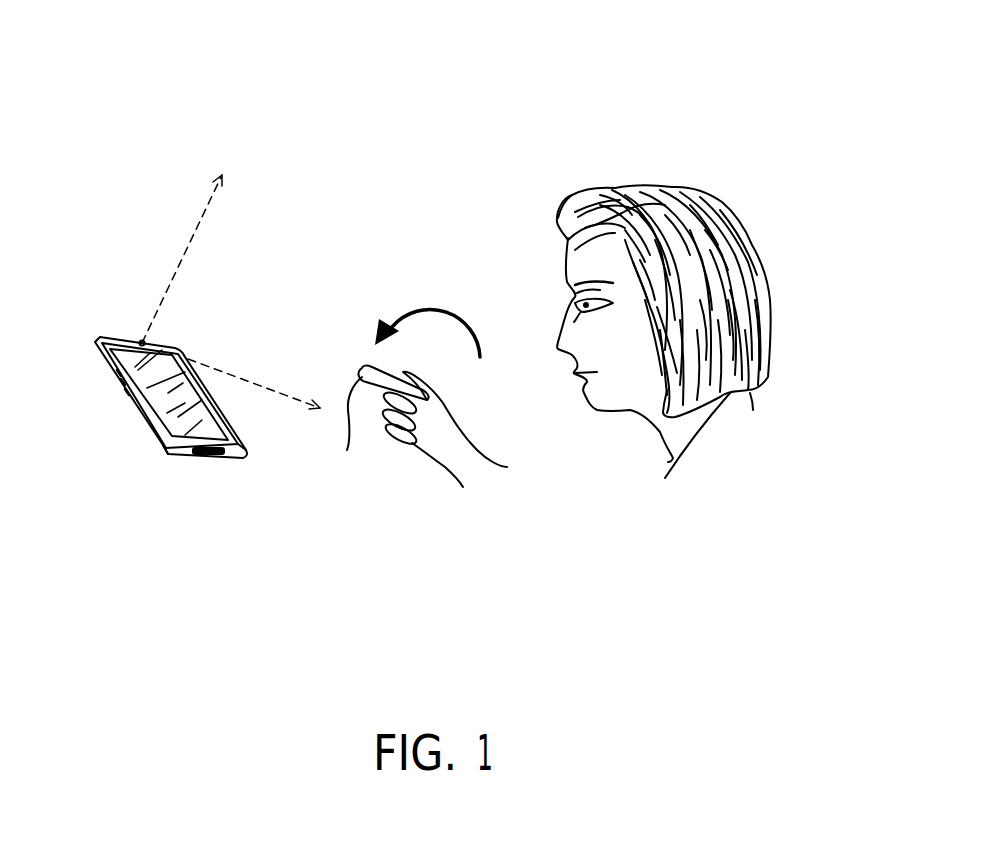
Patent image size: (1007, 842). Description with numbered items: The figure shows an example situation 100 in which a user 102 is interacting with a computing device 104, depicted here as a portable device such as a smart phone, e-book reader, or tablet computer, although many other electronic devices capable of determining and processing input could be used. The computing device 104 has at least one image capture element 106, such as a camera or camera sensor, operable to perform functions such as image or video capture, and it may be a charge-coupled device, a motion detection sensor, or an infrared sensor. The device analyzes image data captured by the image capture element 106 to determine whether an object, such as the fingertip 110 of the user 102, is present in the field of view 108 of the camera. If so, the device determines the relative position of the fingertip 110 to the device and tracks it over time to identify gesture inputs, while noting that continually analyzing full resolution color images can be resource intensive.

The example situation 100 is at (742, 90).
The user 102 is at (520, 242).
The computing device 104 is at (238, 460).
The image capture element 106 is at (140, 341).
The field of view 108 is at (207, 210).
The fingertip 110 is at (347, 450).